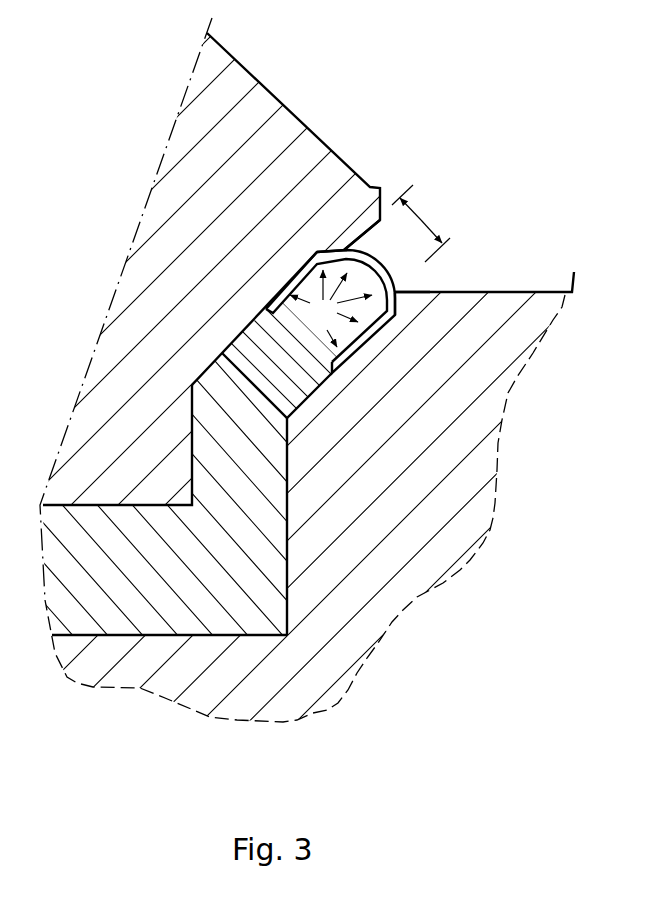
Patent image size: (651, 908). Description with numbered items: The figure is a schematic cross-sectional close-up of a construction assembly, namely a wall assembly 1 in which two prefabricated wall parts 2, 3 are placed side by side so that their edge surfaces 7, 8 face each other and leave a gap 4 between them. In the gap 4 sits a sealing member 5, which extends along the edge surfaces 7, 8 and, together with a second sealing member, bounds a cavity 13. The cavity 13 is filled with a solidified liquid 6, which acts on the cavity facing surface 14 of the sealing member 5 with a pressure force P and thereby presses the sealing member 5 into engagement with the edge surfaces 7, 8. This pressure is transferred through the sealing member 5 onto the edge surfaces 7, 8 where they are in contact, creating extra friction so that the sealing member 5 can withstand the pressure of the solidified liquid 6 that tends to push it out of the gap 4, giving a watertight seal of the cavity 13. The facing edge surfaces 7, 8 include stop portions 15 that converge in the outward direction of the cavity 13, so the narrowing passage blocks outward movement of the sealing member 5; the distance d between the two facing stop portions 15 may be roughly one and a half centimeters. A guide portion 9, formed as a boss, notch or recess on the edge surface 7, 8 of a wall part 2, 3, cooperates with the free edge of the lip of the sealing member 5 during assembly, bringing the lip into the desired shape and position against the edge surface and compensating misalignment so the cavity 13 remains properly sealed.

The wall assembly 1 is at (325, 454).
The wall part 2 is at (428, 520).
The wall part 3 is at (193, 217).
The gap 4 is at (365, 431).
The sealing member 5 is at (378, 273).
The solidified liquid 6 is at (143, 580).
The edge surface 7 is at (283, 542).
The edge surface 8 is at (214, 368).
The guide portion 9 is at (336, 248).
The cavity 13 is at (172, 590).
The cavity facing surface 14 is at (283, 303).
The stop portion 15 is at (370, 215).